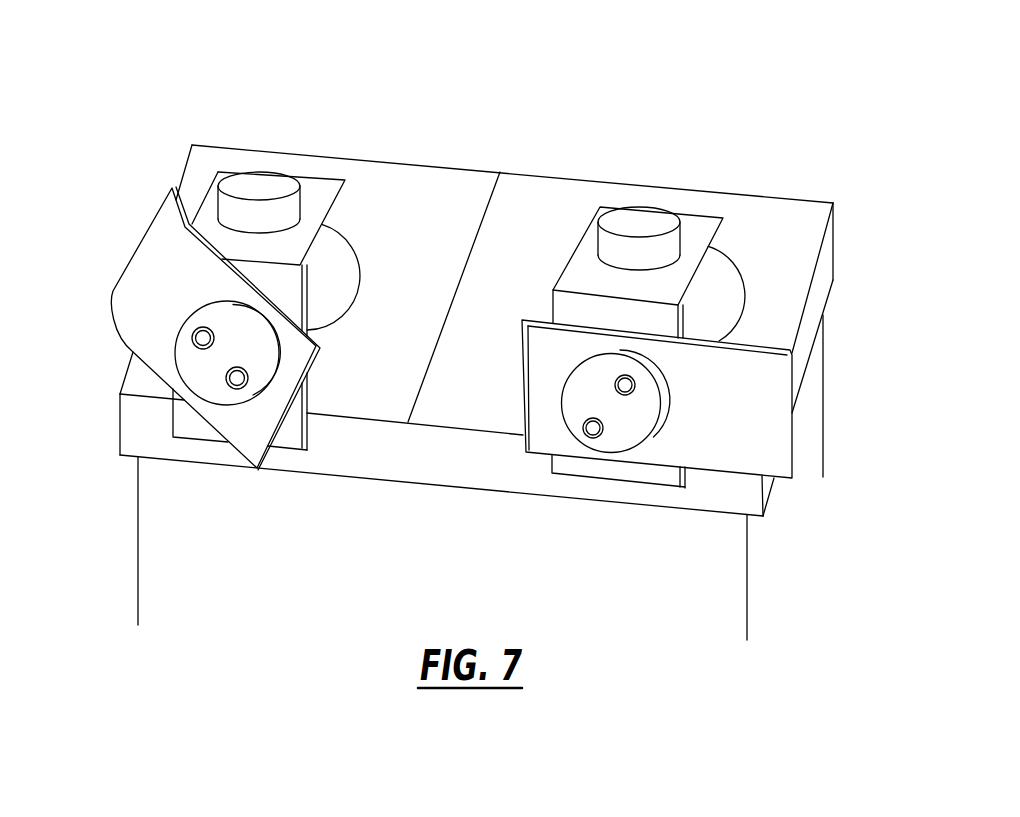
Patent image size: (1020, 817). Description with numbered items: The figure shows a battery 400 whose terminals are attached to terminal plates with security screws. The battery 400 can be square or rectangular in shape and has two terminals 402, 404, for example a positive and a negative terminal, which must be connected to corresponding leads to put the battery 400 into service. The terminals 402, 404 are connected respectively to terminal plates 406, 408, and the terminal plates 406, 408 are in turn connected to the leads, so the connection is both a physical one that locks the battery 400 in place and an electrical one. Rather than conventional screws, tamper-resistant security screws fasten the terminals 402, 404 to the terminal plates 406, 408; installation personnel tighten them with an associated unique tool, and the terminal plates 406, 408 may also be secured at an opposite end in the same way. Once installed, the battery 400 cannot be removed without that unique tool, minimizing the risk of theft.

The battery 400 is at (744, 58).
The terminal 402 is at (265, 190).
The terminal 404 is at (645, 223).
The terminal plate 406 is at (147, 315).
The terminal plate 408 is at (723, 443).